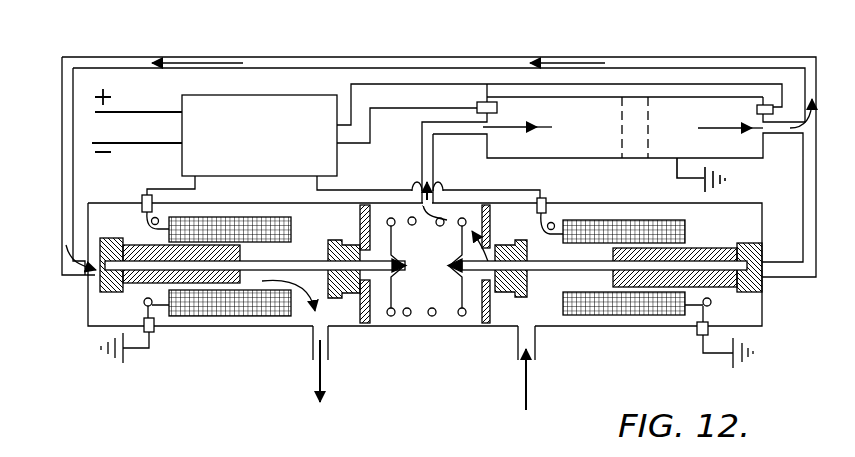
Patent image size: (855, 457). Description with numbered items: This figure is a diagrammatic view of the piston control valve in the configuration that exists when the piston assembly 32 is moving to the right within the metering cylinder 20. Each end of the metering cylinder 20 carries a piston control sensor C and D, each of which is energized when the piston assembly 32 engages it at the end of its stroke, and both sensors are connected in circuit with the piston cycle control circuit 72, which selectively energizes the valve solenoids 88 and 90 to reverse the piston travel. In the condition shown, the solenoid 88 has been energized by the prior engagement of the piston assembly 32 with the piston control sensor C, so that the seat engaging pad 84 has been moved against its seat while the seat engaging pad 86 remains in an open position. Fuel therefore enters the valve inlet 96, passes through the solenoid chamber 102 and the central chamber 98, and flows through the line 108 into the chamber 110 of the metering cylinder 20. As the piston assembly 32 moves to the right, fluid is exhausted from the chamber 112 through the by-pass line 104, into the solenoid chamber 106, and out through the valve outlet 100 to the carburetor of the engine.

The piston cycle control circuit 72 is at (247, 93).
The by-pass line 104 is at (325, 57).
The piston control sensor C is at (487, 101).
The piston control sensor D is at (770, 104).
The piston assembly 32 is at (632, 122).
The metering cylinder 20 is at (722, 96).
The line 108 is at (422, 143).
The chamber 110 is at (520, 142).
The chamber 112 is at (730, 147).
The solenoid chamber 106 is at (100, 310).
The valve solenoid 88 is at (246, 311).
The valve solenoid 90 is at (620, 300).
The valve outlet 100 is at (312, 340).
The valve inlet 96 is at (518, 343).
The seat engaging pad 84 is at (352, 292).
The seat engaging pad 86 is at (527, 300).
The central chamber 98 is at (418, 292).
The solenoid chamber 102 is at (738, 310).